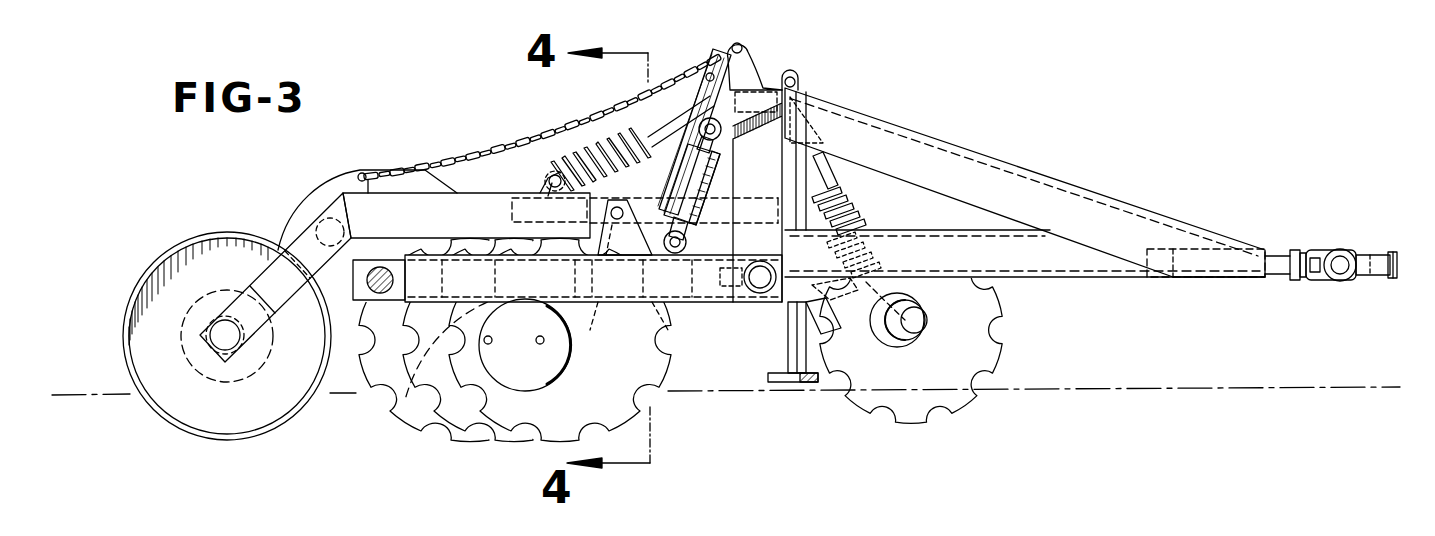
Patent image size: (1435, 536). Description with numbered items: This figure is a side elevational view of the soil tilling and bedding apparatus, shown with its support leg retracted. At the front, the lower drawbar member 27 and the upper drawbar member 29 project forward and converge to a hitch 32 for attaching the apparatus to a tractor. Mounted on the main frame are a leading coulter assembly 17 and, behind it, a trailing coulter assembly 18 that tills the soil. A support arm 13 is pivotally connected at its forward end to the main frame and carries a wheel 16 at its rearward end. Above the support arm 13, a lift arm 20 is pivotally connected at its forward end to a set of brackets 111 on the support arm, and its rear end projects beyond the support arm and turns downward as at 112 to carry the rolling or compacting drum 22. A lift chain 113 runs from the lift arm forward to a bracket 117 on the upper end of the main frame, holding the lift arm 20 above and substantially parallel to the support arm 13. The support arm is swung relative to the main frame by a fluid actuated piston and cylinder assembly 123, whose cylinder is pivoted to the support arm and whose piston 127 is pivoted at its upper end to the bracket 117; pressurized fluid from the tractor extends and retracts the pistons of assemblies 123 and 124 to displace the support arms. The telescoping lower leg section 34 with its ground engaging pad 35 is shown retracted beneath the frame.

The support arm 13 is at (486, 288).
The wheel 16 is at (318, 195).
The leading coulter assembly 17 is at (1012, 348).
The trailing coulter assembly 18 is at (520, 446).
The lift arm 20 is at (458, 224).
The rolling or compacting drum 22 is at (143, 296).
The lower drawbar member 27 is at (1052, 270).
The upper drawbar member 29 is at (1003, 175).
The hitch 32 is at (1336, 251).
The lower tubular leg section 34 is at (790, 343).
The ground engaging pad 35 is at (778, 384).
The brackets 111 is at (640, 302).
The downwardly projecting end of lift arm 112 is at (272, 266).
The lift chain or cable 113 is at (545, 138).
The bracket 117 is at (750, 62).
The fluid actuated piston and cylinder assembly 123 is at (714, 182).
The fluid actuated piston and cylinder assembly 124 is at (688, 180).
The piston 127 is at (700, 146).